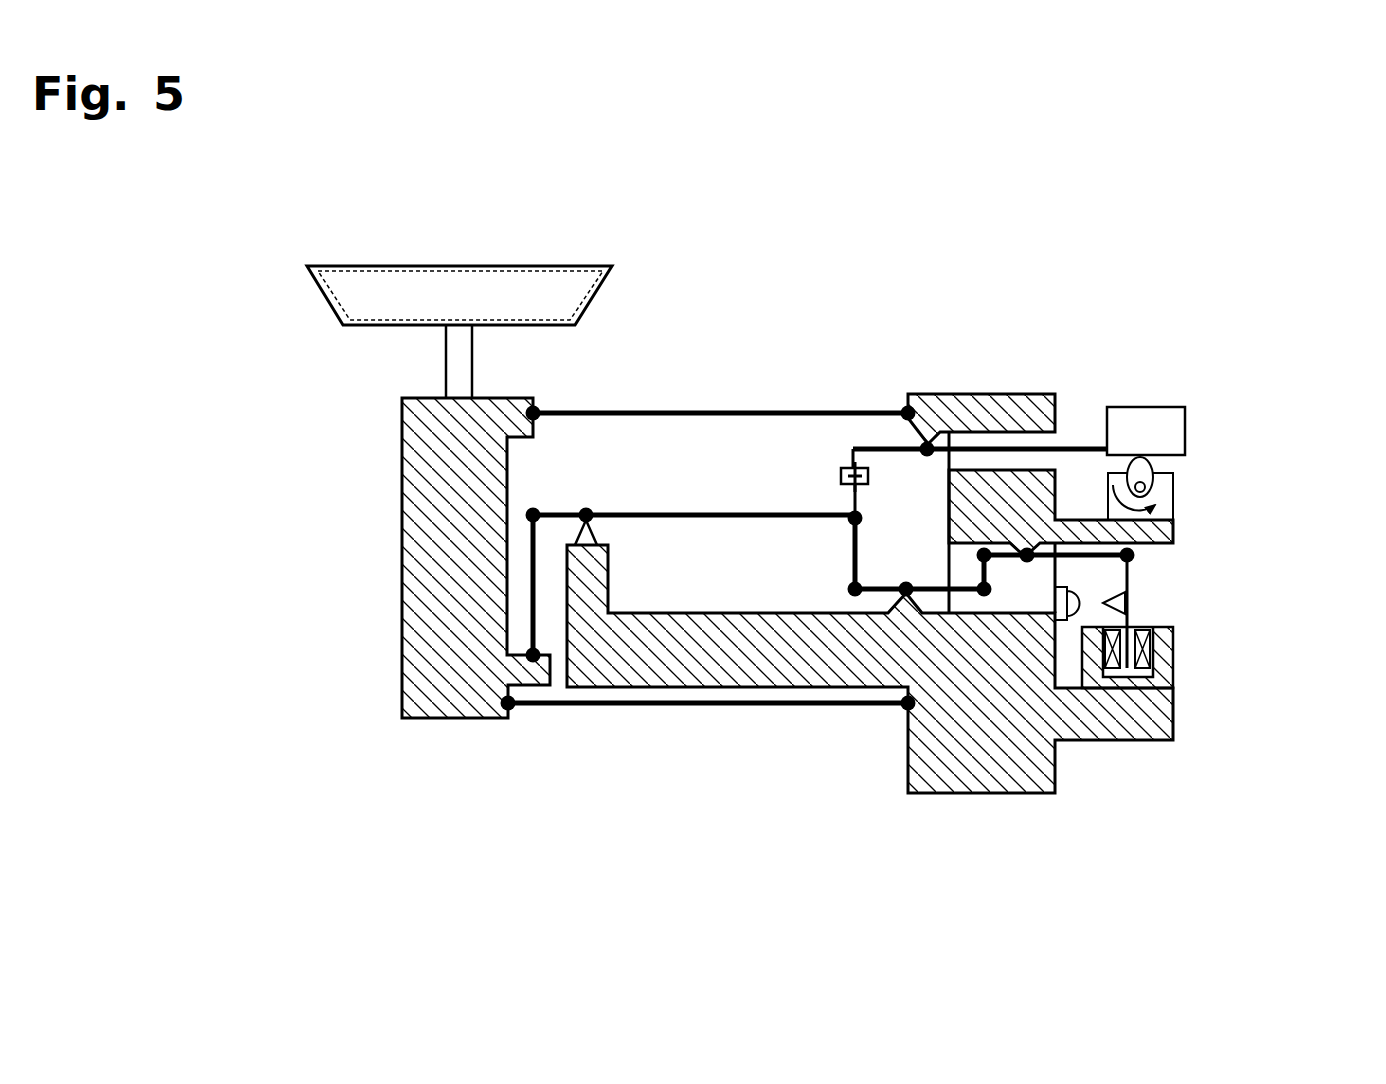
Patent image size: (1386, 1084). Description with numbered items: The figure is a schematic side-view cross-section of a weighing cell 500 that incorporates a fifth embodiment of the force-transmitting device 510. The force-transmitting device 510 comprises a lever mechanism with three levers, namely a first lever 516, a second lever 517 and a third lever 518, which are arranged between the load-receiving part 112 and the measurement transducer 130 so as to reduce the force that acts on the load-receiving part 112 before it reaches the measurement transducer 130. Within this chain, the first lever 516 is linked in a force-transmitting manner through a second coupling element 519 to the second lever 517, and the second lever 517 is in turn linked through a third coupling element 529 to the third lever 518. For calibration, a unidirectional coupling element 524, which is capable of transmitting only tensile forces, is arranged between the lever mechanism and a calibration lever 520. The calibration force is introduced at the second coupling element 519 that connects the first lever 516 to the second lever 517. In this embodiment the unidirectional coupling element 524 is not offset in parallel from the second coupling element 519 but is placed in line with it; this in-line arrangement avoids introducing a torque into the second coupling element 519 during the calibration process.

The weighing cell 500 is at (1214, 292).
The load-receiving part 112 is at (455, 547).
The force-transmitting device 510 is at (753, 465).
The first lever 516 is at (671, 514).
The second lever 517 is at (930, 594).
The third lever 518 is at (1012, 548).
The second coupling element 519 is at (848, 560).
The calibration lever 520 is at (1079, 445).
The unidirectional coupling element 524 is at (847, 468).
The third coupling element 529 is at (993, 573).
The measurement transducer 130 is at (1206, 620).